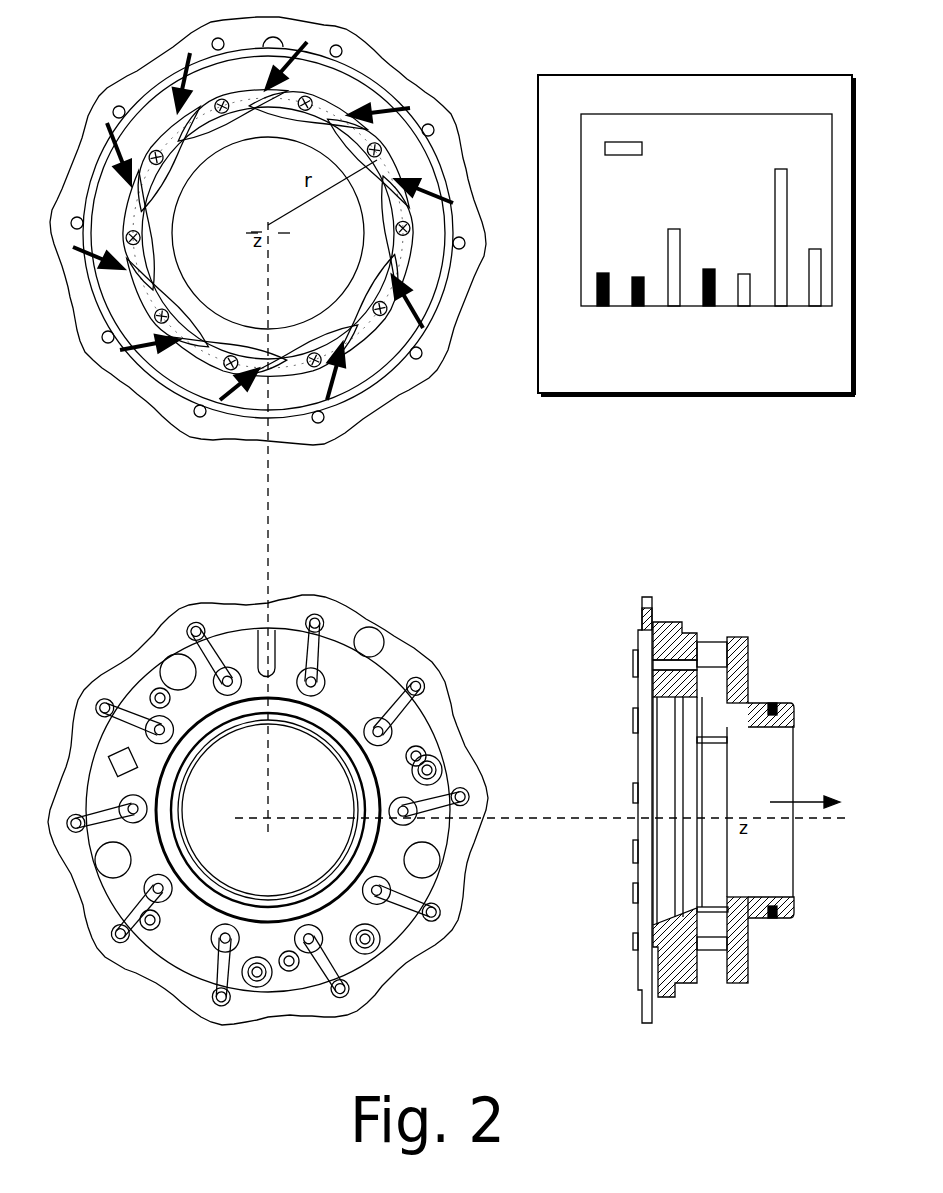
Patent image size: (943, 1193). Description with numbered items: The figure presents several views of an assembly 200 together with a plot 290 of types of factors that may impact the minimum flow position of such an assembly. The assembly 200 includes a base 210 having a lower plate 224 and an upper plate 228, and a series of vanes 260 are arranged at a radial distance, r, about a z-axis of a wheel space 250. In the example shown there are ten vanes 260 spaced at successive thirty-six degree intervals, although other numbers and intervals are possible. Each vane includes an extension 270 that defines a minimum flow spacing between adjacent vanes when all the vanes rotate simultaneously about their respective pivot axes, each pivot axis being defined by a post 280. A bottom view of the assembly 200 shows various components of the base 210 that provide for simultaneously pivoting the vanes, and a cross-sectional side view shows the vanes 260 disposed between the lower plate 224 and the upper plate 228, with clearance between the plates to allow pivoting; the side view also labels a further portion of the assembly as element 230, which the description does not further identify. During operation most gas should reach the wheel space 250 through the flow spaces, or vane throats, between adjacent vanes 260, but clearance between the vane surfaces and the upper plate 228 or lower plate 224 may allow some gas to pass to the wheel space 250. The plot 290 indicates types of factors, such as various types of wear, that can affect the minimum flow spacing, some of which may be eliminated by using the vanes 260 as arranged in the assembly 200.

The assembly 200 is at (106, 45).
The base 210 is at (393, 77).
The lower plate 224 is at (365, 212).
The upper plate 228 is at (722, 950).
The outlet ring 230 is at (752, 703).
The wheel space 250 is at (327, 288).
The vanes 260 is at (203, 120).
The extension 270 is at (167, 120).
The post 280 is at (160, 163).
The plot 290 is at (723, 104).